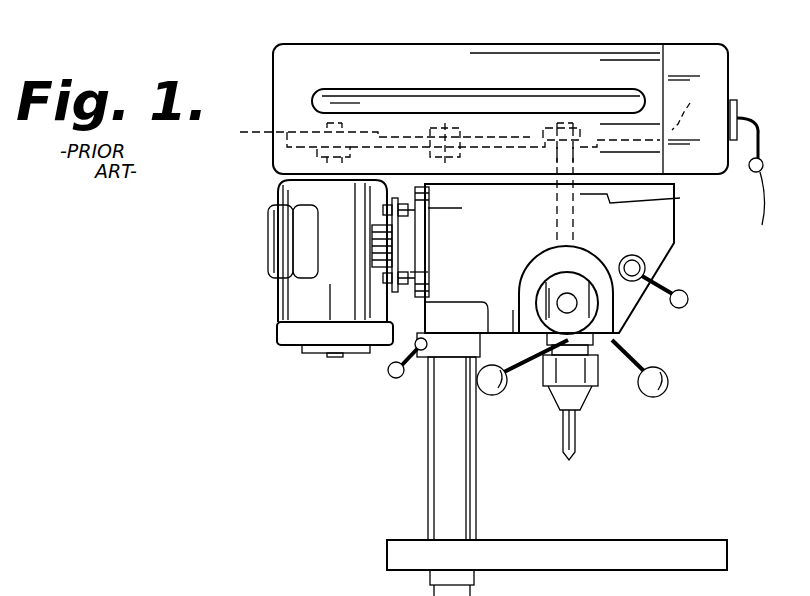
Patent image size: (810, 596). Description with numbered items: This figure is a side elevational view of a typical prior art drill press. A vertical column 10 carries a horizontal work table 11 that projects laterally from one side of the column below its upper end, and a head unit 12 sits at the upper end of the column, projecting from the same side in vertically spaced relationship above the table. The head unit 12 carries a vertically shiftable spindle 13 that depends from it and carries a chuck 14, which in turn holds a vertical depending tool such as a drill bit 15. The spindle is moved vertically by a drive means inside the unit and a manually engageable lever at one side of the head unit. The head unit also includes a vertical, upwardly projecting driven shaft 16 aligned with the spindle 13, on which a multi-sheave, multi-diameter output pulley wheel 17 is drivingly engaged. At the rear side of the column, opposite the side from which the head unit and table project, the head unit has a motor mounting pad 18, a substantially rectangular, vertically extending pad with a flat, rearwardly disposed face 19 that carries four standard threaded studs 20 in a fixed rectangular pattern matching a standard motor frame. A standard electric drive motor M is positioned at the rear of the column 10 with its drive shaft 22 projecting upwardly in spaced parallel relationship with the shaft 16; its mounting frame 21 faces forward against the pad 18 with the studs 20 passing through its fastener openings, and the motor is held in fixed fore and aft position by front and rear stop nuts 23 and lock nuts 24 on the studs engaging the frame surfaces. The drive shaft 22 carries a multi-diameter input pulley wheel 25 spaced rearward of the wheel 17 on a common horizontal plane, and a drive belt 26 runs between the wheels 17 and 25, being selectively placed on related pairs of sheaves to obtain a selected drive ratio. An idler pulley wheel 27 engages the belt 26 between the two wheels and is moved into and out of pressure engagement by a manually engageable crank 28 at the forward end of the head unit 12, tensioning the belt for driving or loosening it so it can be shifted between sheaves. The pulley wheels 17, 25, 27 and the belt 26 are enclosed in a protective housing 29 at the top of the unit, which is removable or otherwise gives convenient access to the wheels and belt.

The vertical column 10 is at (470, 486).
The horizontal work table 11 is at (620, 545).
The head unit 12 is at (655, 220).
The spindle 13 is at (585, 350).
The chuck 14 is at (578, 427).
The drill bit 15 is at (650, 372).
The driven shaft 16 is at (680, 198).
The output pulley wheel 17 is at (684, 112).
The motor mounting pad 18 is at (438, 250).
The face 19 is at (435, 221).
The threaded studs 20 is at (420, 207).
The mounting frame 21 is at (373, 238).
The drive shaft 22 is at (333, 182).
The stop nuts 23 is at (425, 272).
The lock nuts 24 is at (390, 283).
The input pulley wheel 25 is at (250, 134).
The drive belt 26 is at (432, 72).
The idler pulley wheel 27 is at (506, 72).
The crank 28 is at (747, 167).
The protective housing 29 is at (386, 12).
The electric drive motor M is at (272, 303).